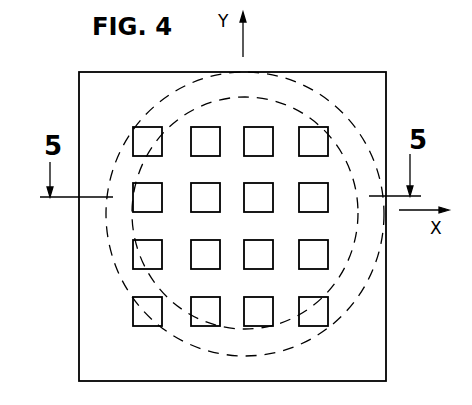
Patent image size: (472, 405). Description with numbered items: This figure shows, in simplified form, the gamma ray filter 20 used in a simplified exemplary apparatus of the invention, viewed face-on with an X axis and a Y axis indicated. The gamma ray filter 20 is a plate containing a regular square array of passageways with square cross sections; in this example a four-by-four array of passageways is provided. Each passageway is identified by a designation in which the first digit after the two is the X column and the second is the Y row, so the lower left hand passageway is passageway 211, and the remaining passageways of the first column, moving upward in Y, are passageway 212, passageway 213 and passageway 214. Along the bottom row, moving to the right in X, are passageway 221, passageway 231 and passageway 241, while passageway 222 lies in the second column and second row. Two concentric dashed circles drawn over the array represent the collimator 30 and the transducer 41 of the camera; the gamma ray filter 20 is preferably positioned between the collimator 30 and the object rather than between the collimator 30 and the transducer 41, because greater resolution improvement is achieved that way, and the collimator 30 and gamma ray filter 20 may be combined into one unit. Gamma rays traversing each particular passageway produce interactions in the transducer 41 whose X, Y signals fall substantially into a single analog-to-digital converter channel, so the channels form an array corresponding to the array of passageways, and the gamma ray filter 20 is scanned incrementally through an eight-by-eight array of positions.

The gamma ray filter 20 is at (381, 345).
The collimator 30 is at (356, 299).
The transducer 41 is at (353, 250).
The passageway 211 is at (146, 321).
The passageway 212 is at (139, 259).
The passageway 213 is at (148, 210).
The passageway 214 is at (153, 152).
The passageway 221 is at (201, 322).
The passageway 222 is at (203, 267).
The passageway 231 is at (263, 321).
The passageway 241 is at (323, 322).